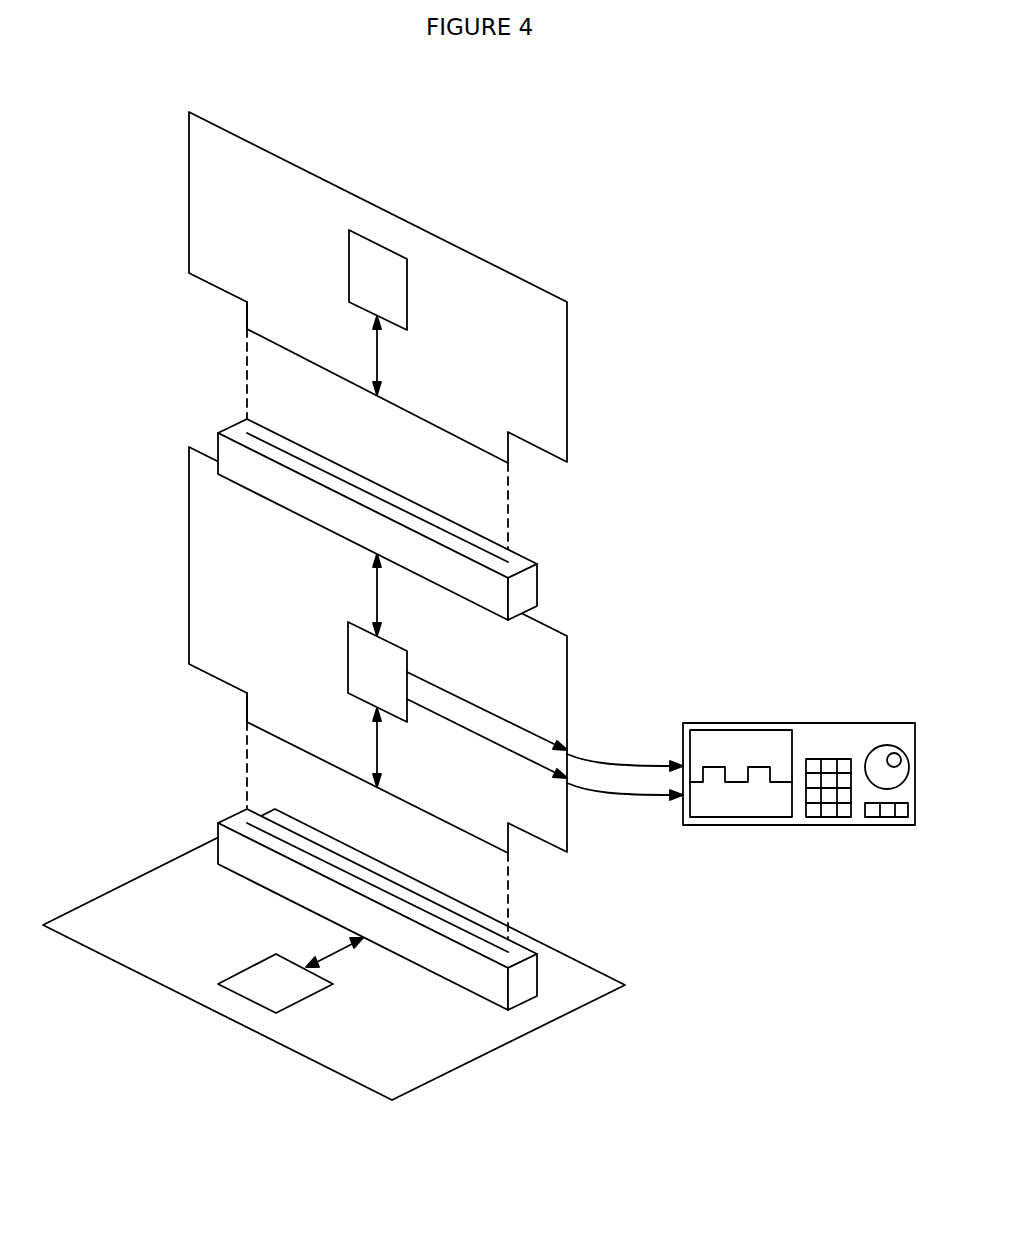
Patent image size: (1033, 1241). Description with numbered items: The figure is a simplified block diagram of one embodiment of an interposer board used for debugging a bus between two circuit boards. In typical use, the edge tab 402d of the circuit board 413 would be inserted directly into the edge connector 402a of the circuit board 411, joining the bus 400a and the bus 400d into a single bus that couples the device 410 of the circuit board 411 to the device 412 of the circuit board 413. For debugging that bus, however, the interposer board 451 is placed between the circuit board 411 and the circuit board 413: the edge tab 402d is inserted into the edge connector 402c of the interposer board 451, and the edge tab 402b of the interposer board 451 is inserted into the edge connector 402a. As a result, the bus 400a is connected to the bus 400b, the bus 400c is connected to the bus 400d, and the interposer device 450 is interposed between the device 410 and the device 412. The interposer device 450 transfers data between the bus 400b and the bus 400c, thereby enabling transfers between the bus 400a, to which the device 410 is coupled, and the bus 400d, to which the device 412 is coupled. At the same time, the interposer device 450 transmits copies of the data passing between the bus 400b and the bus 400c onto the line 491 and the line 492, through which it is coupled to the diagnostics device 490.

The bus 400a is at (342, 952).
The bus 400b is at (377, 742).
The bus 400c is at (375, 597).
The bus 400d is at (377, 348).
The edge connector 402a is at (235, 810).
The edge tab 402b is at (247, 705).
The edge connector 402c is at (235, 420).
The edge tab 402d is at (247, 315).
The device 410 is at (268, 980).
The circuit board 411 is at (537, 1027).
The device 412 is at (377, 265).
The circuit board 413 is at (508, 272).
The interposer device 450 is at (378, 670).
The interposer board 451 is at (550, 627).
The diagnostics device 490 is at (740, 723).
The line 491 is at (590, 793).
The line 492 is at (590, 757).